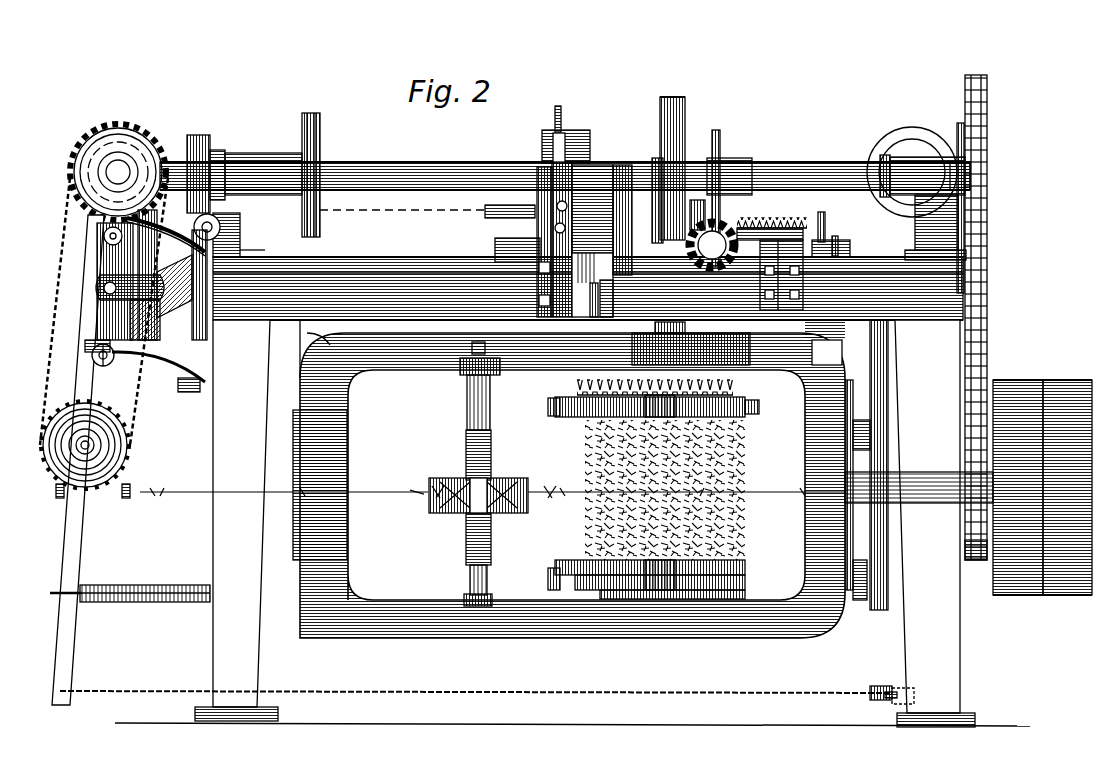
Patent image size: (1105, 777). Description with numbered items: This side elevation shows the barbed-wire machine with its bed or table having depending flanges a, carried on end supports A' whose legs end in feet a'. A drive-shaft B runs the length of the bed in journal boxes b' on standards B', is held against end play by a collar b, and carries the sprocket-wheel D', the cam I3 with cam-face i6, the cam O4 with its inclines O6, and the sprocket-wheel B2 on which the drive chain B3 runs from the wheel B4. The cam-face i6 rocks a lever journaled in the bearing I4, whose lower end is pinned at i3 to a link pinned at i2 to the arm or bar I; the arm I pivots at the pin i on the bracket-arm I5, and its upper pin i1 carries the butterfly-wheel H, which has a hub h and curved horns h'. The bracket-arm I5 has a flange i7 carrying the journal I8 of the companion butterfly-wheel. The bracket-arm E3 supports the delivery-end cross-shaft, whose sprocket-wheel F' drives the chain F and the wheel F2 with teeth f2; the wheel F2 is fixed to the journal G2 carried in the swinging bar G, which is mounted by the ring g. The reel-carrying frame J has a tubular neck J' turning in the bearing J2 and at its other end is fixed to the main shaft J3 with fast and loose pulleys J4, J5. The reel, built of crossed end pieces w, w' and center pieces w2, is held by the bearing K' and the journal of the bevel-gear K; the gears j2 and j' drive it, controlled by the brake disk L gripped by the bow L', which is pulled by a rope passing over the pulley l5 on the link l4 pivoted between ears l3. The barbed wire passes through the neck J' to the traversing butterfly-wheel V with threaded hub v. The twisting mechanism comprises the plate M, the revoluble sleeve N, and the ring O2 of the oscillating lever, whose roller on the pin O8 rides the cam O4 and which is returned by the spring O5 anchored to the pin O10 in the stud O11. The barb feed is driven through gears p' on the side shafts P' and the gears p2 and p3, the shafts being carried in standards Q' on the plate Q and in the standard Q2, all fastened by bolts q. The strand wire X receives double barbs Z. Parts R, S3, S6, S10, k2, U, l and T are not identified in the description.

The depending flange a is at (588, 301).
The end support A' is at (586, 516).
The foot or flange a' is at (572, 707).
The reel-carrying frame J is at (572, 479).
The journal box or bearing J2 is at (296, 405).
The tubular neck or journal J' is at (320, 485).
The drive-shaft B is at (565, 153).
The journal box or bearing b' is at (595, 149).
The sprocket-wheel D' is at (321, 169).
The cam I3 is at (195, 163).
The cam-face i6 is at (218, 150).
The bearing or box I4 is at (300, 260).
The pin or pivot i3 is at (304, 237).
The pin or pivot i2 is at (218, 222).
The drive-chain F is at (92, 401).
The sprocket or chain wheel F' is at (96, 311).
The journal or pin i1 is at (105, 240).
The pin or pivot i is at (100, 236).
The bracket-arm E3 is at (98, 262).
The arm or bar I is at (128, 275).
The butterfly-wheel H is at (167, 279).
The swinging or oscillating bar G is at (86, 346).
The journal or pin I8 is at (106, 364).
The bracket-arm I5 is at (168, 375).
The web or flange i7 is at (190, 392).
The sprocket or chain wheel F2 is at (95, 443).
The journal or pin G2 is at (85, 445).
The teeth f2 is at (60, 492).
The rod R is at (492, 172).
The plate M is at (501, 253).
The housing S3 is at (540, 165).
The plunger S6 is at (568, 135).
The pin S10 is at (561, 110).
The bolts q is at (544, 242).
The shaft P' is at (574, 239).
The gear p2 is at (584, 209).
The plate Q is at (592, 285).
The uprights or standards Q' is at (575, 310).
The rod k2 is at (611, 298).
The gear p3 is at (632, 207).
The companion gear p' is at (637, 183).
The center or hub h is at (722, 259).
The incline O6 is at (716, 132).
The cam O4 is at (730, 158).
The pin or journal O8 is at (695, 207).
The ring O2 is at (725, 232).
The spring O5 is at (772, 220).
The band or ring g is at (775, 302).
The pin or bolt O10 is at (836, 221).
The stud O11 is at (846, 243).
The standard or upright Q2 is at (840, 262).
The collar b is at (876, 192).
The bearing U is at (912, 162).
The sprocket or chain wheel B2 is at (966, 170).
The standards or uprights B' is at (958, 227).
The sprocket or drive chain B3 is at (988, 303).
The sprocket or chain wheel B4 is at (970, 562).
The fast pulley J4 is at (1018, 487).
The loose pulley J5 is at (1067, 487).
The shaft J3 is at (905, 482).
The brake wheel or disk L is at (891, 465).
The rod l is at (865, 485).
The bow of metal L' is at (846, 597).
The gear j' is at (859, 435).
The gear j2 is at (827, 349).
The link l4 is at (888, 688).
The ears l3 is at (910, 688).
The pulley-wheel l5 is at (876, 704).
The butterfly-wheel V is at (493, 474).
The center or hub v is at (493, 484).
The double barb Z is at (492, 473).
The wire X is at (481, 474).
The horns or arms h' is at (691, 337).
The bevel-gear K is at (668, 386).
The crossed end piece w' is at (665, 486).
The crossed end piece w is at (712, 488).
The connecting center pieces w2 is at (700, 578).
The revoluble sleeve N is at (665, 490).
The bearing K' is at (672, 622).
The bracket T is at (506, 496).